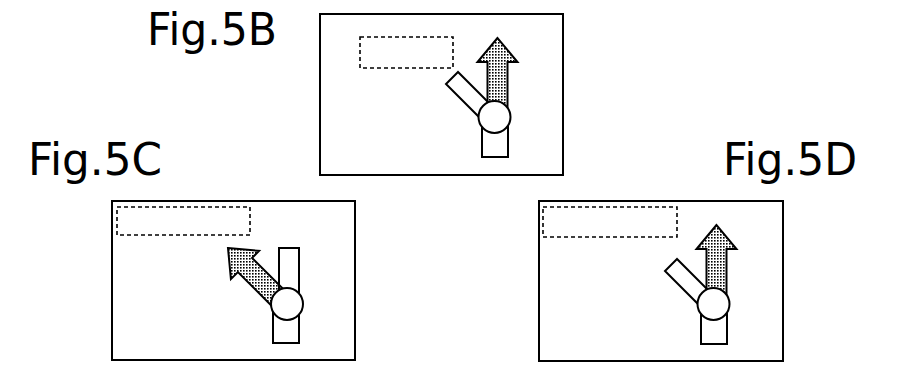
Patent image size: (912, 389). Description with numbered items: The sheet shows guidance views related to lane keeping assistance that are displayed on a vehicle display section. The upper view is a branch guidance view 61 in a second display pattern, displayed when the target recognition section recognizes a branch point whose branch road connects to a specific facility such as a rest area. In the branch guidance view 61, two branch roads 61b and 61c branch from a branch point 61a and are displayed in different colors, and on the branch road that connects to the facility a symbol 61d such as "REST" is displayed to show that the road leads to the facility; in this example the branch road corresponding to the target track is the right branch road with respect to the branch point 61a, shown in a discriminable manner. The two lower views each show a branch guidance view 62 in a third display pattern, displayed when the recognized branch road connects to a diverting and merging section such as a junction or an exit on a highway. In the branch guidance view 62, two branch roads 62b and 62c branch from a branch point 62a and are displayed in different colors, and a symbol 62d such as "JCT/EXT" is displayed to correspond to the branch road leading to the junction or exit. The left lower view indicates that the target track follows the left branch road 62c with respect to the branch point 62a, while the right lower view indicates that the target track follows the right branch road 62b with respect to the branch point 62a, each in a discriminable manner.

In FIG. 5B, the branch guidance view 61 is at (564, 35).
In FIG. 5B, the branch point 61a is at (511, 116).
In FIG. 5B, the branch road 61b is at (508, 78).
In FIG. 5B, the branch road 61c is at (455, 97).
In FIG. 5B, the symbol 61d is at (358, 50).
In FIG. 5C, the branch guidance view 62 is at (112, 273).
In FIG. 5D, the branch guidance view 62 is at (783, 340).
In FIG. 5C, the branch point 62a is at (304, 304).
In FIG. 5D, the branch point 62a is at (731, 304).
In FIG. 5C, the branch road 62b is at (300, 268).
In FIG. 5D, the branch road 62b is at (728, 266).
In FIG. 5C, the branch road 62c is at (247, 283).
In FIG. 5D, the branch road 62c is at (676, 282).
In FIG. 5C, the symbol 62d is at (117, 222).
In FIG. 5D, the symbol 62d is at (573, 238).